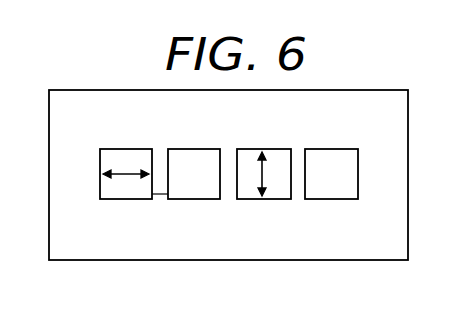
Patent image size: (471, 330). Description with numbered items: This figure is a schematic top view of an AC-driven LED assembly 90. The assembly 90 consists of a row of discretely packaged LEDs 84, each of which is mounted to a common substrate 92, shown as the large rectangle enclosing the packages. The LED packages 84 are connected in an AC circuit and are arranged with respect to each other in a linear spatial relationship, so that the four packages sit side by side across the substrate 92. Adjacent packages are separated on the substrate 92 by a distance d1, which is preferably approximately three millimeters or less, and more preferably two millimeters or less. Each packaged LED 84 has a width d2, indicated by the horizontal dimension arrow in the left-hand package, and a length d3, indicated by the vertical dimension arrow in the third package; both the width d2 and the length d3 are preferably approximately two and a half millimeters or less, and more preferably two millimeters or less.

The AC-driven LED assembly 90 is at (269, 264).
The substrate 92 is at (115, 240).
The packaged LEDs 84 is at (325, 155).
The distance d1 is at (153, 189).
The width d2 is at (122, 176).
The length d3 is at (261, 175).